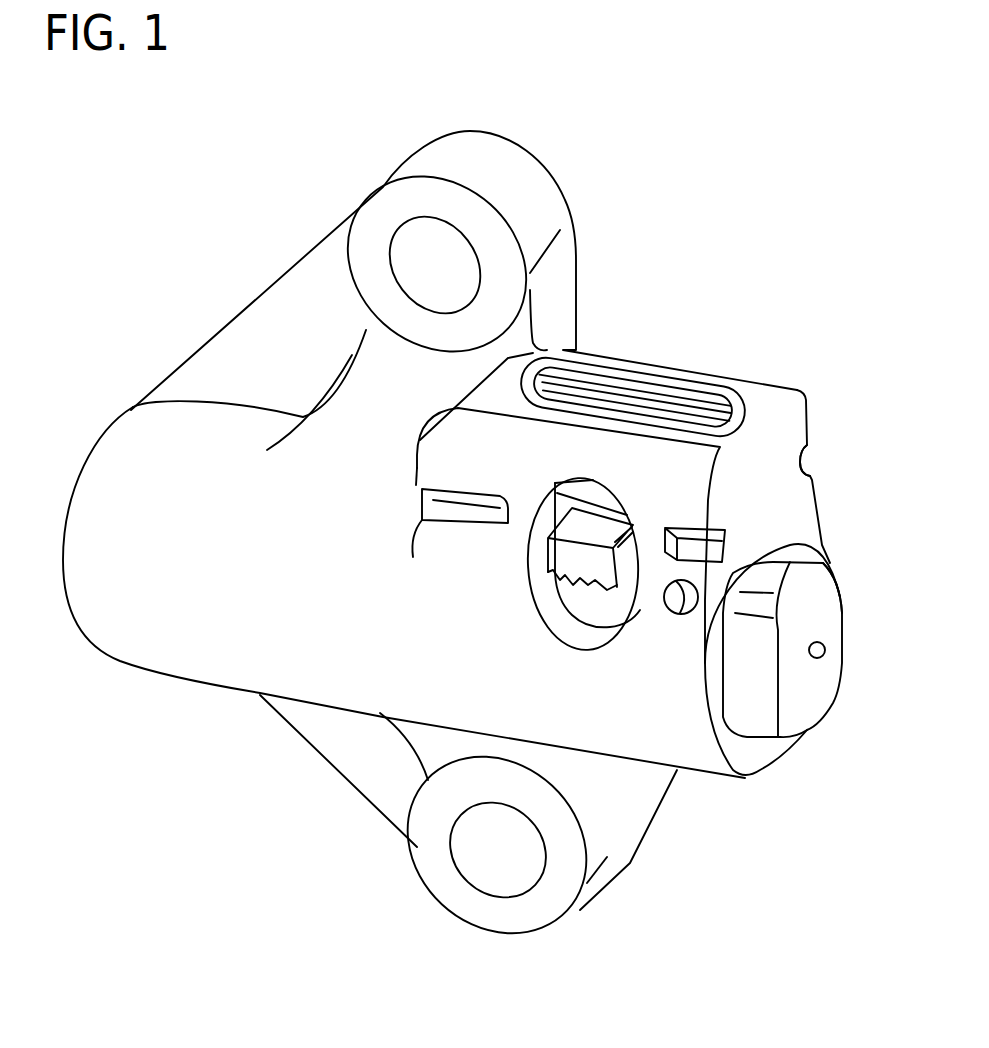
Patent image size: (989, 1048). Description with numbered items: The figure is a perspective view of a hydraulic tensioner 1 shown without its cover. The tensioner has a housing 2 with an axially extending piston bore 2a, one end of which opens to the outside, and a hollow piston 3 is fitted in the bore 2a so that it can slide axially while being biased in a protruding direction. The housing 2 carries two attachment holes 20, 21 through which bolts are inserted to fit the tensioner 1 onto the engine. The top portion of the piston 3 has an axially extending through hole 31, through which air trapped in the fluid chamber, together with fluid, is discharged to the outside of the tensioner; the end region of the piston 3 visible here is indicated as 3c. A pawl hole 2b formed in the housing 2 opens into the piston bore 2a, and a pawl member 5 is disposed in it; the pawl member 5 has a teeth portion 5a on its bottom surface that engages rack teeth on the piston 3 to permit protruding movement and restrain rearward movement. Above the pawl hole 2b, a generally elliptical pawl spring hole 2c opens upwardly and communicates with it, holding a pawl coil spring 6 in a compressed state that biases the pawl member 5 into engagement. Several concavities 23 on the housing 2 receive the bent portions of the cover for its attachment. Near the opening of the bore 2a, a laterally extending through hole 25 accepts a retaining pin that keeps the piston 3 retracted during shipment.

The hydraulic tensioner 1 is at (184, 223).
The housing 2 is at (131, 410).
The piston bore 2a is at (737, 710).
The pawl hole 2b is at (622, 617).
The pawl spring hole 2c is at (730, 397).
The hollow piston 3 is at (768, 740).
The plunger end 3c is at (827, 567).
The pawl member 5 is at (555, 565).
The teeth portion 5a is at (560, 600).
The pawl coil spring 6 is at (660, 387).
The attachment hole 20 is at (400, 238).
The attachment hole 21 is at (512, 893).
The concavities 23 is at (412, 497).
The through hole 25 is at (685, 617).
The through hole 31 is at (820, 658).